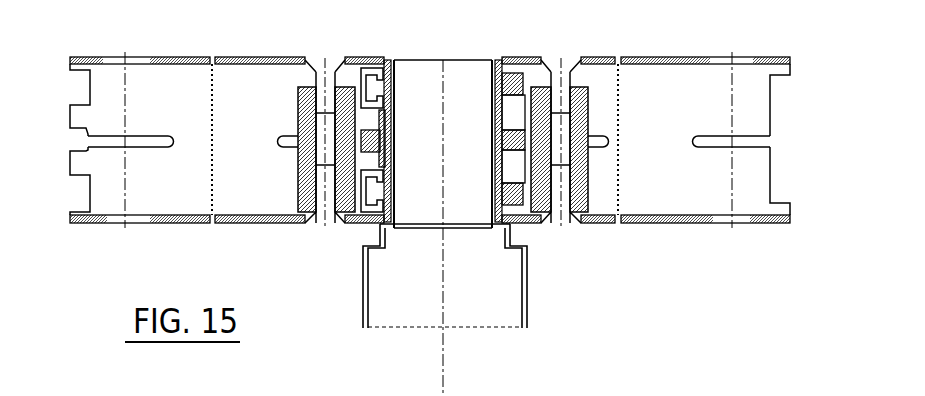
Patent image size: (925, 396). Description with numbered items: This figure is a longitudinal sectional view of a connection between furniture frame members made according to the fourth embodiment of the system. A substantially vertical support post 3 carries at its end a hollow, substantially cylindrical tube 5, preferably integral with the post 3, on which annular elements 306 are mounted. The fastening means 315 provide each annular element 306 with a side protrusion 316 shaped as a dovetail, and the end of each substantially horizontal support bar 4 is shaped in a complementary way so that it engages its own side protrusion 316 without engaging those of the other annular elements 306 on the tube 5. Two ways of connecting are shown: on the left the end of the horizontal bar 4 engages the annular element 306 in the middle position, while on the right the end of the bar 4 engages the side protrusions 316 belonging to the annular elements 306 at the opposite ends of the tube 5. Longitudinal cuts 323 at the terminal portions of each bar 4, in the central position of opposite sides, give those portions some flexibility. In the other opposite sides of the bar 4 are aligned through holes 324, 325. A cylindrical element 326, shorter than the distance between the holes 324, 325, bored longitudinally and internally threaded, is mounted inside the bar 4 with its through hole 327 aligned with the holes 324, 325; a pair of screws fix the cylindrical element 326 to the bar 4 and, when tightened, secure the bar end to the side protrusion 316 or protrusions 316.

The support post 3 is at (538, 314).
The support bar 4 is at (106, 83).
The tube 5 is at (473, 142).
The annular element 306 is at (387, 192).
The fastening means 315 is at (470, 41).
The side protrusion 316 is at (513, 87).
The longitudinal cut 323 is at (278, 143).
The through hole 324 is at (300, 77).
The through hole 325 is at (314, 224).
The cylindrical element 326 is at (308, 193).
The through hole 327 is at (323, 157).